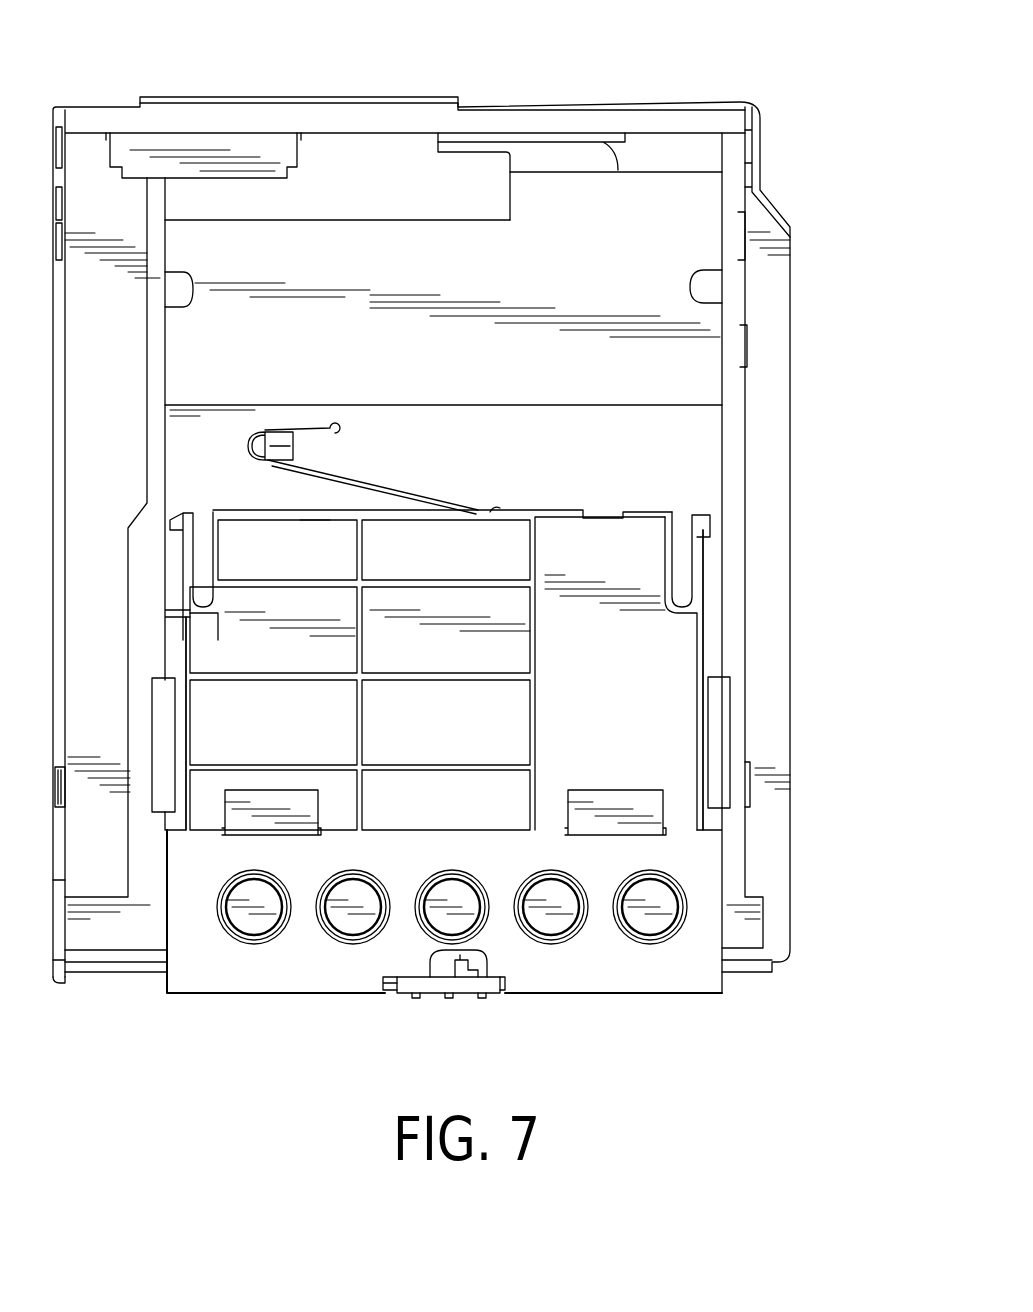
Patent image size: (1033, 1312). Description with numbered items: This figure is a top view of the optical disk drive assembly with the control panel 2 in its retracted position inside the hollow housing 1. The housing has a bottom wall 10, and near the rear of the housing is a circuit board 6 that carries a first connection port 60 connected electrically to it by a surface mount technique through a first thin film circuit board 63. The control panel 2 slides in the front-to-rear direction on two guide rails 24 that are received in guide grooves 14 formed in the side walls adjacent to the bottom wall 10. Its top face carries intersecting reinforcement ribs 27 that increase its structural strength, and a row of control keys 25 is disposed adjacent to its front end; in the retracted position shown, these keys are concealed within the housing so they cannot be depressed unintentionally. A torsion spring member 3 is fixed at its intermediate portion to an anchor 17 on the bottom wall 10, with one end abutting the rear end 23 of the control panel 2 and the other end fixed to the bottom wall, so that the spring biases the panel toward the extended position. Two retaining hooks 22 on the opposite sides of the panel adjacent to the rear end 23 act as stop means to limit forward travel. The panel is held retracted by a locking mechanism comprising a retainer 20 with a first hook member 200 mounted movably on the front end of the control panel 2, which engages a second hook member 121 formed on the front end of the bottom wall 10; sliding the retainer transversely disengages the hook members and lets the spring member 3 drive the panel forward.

The hollow housing 1 is at (777, 91).
The control panel 2 is at (694, 1013).
The torsion spring member 3 is at (368, 478).
The circuit board 6 is at (578, 207).
The bottom wall 10 is at (698, 478).
The guide grooves 14 is at (160, 697).
The anchor 17 is at (277, 445).
The retainer 20 is at (467, 985).
The retaining hooks 22 is at (187, 514).
The rear end 23 is at (527, 510).
The guide rails 24 is at (172, 640).
The control keys 25 is at (254, 918).
The reinforcement ribs 27 is at (467, 672).
The first connection port 60 is at (203, 150).
The first thin film circuit board 63 is at (376, 183).
The second hook member 121 is at (483, 978).
The first hook member 200 is at (457, 977).